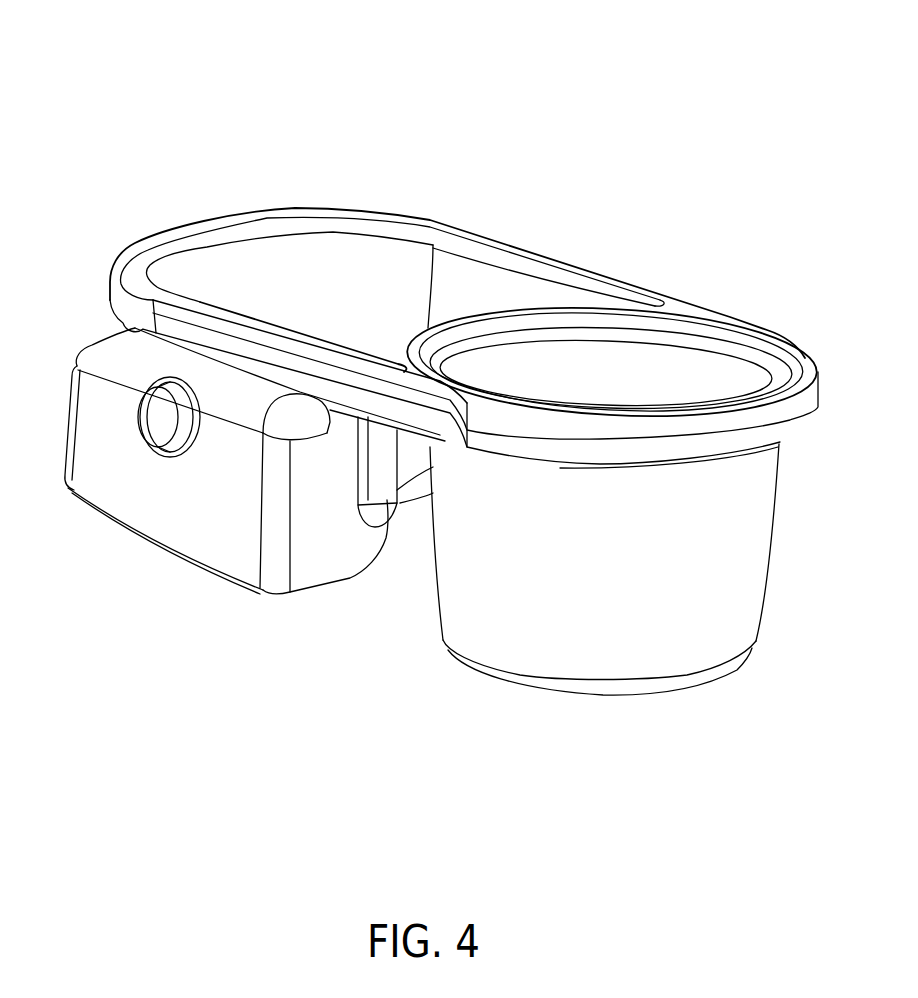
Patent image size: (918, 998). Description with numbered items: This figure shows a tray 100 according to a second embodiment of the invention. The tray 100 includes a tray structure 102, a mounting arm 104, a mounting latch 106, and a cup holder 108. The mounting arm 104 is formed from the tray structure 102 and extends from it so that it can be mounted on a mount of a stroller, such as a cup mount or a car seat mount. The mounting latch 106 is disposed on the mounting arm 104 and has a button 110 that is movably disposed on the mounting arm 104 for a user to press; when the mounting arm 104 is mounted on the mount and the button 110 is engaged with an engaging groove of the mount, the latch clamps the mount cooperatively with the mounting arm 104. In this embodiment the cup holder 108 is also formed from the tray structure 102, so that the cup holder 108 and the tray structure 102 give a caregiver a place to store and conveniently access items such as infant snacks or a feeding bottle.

The tray 100 is at (663, 83).
The tray structure 102 is at (357, 257).
The mounting arm 104 is at (93, 360).
The mounting latch 106 is at (141, 432).
The cup holder 108 is at (587, 633).
The button 110 is at (160, 437).